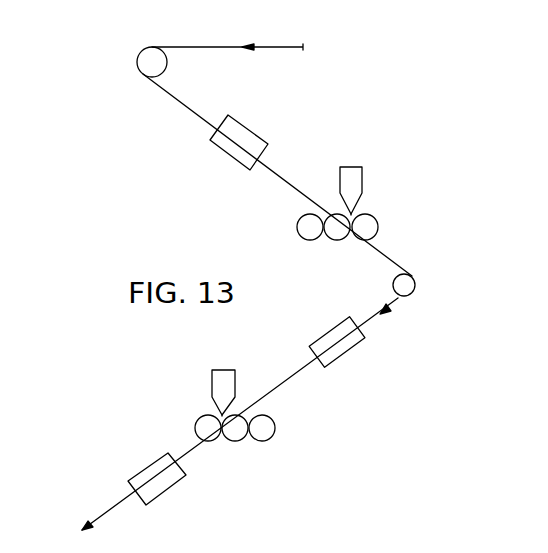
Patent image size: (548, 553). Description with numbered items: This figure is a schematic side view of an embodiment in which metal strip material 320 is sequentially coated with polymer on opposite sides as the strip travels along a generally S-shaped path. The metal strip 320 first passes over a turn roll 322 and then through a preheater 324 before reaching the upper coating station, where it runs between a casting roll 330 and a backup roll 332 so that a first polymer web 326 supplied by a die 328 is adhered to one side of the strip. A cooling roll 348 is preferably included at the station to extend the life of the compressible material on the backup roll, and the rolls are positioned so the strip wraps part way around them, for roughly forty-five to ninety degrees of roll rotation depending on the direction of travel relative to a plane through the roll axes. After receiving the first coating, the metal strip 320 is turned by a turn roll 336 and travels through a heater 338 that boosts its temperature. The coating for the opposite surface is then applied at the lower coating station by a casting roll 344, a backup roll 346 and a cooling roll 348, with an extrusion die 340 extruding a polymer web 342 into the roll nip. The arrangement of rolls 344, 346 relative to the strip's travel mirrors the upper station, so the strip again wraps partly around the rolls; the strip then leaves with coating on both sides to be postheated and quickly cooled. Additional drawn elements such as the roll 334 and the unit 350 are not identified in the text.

The metal strip material 320 is at (282, 44).
The turn roll 322 is at (167, 63).
The preheater 324 is at (222, 154).
The first polymer web 326 is at (353, 214).
The die 328 is at (352, 166).
The casting roll 330 is at (379, 226).
The backup roll 332 is at (338, 241).
The roller 334 is at (296, 226).
The turn roll 336 is at (414, 280).
The heater 338 is at (341, 360).
The extrusion die 340 is at (222, 370).
The polymer web 342 is at (219, 415).
The casting roll 344 is at (195, 428).
The backup roll 346 is at (236, 441).
The cooling roll 348 is at (275, 426).
The dryer 350 is at (166, 490).